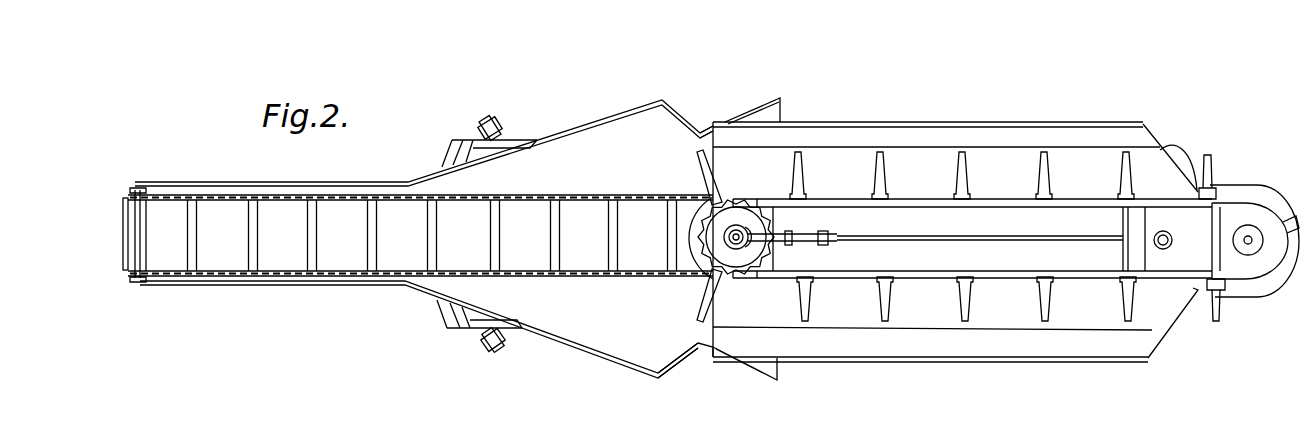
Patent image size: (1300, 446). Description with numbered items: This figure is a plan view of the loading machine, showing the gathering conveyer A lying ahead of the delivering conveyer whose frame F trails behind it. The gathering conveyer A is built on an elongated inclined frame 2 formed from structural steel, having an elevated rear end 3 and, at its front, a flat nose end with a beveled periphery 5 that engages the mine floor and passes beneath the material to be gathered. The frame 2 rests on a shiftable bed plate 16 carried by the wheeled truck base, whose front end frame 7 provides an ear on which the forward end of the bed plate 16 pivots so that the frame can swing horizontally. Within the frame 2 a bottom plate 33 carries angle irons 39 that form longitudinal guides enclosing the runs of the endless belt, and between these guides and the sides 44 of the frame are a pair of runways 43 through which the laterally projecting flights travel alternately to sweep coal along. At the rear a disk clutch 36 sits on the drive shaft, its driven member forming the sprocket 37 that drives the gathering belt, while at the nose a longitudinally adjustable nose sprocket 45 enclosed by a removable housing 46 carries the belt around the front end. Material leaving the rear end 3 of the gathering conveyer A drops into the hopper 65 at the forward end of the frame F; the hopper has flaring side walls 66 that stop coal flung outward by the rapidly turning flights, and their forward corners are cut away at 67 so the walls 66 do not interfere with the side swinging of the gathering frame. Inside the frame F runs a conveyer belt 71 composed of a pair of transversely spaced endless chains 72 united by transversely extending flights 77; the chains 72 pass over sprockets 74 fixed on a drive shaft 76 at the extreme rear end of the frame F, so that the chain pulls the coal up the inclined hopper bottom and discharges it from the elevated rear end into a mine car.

The inclined frame 2 is at (972, 292).
The elevated rear end 3 is at (762, 350).
The beveled periphery 5 is at (1263, 297).
The front end frame 7 is at (935, 378).
The shiftable bed plate 16 is at (1212, 160).
The bottom plate 33 is at (963, 236).
The disk clutch 36 is at (742, 223).
The sprocket 37 is at (755, 210).
The angle irons 39 is at (962, 293).
The runways 43 is at (1080, 157).
The sides 44 is at (928, 122).
The nose sprocket 45 is at (1250, 226).
The removable housing 46 is at (1262, 265).
The hopper 65 is at (612, 345).
The flaring side walls 66 is at (424, 143).
The cutaway corners 67 is at (699, 115).
The conveyer belt 71 is at (526, 280).
The endless chains 72 is at (648, 202).
The sprockets 74 is at (138, 284).
The drive shaft 76 is at (145, 206).
The flights 77 is at (491, 236).
The gathering conveyer A is at (1058, 186).
The frame F is at (483, 335).